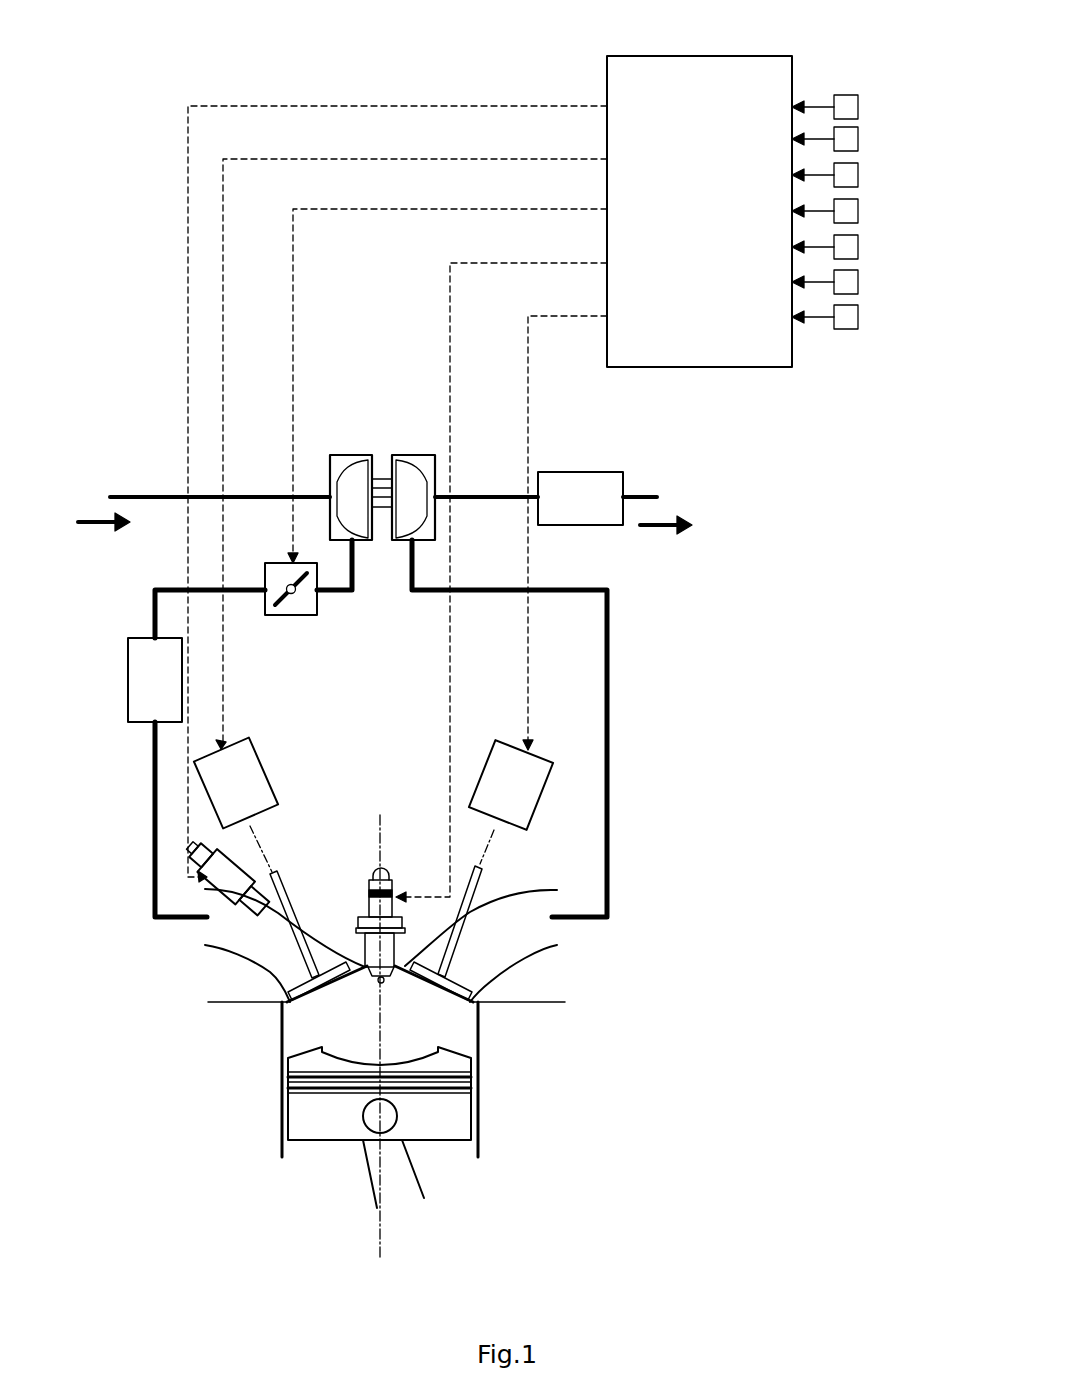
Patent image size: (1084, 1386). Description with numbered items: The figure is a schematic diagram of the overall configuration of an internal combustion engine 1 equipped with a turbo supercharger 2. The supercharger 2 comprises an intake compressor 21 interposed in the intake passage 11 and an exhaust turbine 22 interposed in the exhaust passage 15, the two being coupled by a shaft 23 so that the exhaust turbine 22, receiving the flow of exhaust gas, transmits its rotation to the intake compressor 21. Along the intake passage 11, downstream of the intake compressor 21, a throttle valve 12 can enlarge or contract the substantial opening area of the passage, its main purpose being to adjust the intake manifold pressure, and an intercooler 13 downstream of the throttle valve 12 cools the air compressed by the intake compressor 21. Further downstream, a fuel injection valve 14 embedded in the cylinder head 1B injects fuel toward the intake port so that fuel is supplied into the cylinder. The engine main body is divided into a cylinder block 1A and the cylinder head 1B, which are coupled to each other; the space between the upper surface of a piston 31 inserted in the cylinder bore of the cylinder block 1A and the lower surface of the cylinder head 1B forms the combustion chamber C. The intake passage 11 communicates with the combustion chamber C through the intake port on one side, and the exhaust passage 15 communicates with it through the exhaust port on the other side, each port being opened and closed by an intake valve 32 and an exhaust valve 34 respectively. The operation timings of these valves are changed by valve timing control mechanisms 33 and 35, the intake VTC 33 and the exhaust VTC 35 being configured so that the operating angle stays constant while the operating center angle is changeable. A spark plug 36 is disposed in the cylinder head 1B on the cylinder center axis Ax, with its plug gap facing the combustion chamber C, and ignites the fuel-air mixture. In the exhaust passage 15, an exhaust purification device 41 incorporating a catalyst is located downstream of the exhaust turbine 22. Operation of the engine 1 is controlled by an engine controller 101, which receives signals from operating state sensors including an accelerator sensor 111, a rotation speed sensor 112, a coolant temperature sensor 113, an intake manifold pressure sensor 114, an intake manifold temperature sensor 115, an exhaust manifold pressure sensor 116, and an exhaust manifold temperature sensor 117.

The internal combustion engine 1 is at (693, 601).
The cylinder block 1A is at (378, 1079).
The cylinder head 1B is at (385, 945).
The turbo supercharger 2 is at (384, 448).
The intake passage 11 is at (171, 496).
The throttle valve 12 is at (292, 616).
The intercooler 13 is at (128, 683).
The fuel injection valve 14 is at (253, 870).
The exhaust passage 15 is at (486, 496).
The intake compressor 21 is at (352, 455).
The exhaust turbine 22 is at (412, 455).
The shaft 23 is at (382, 508).
The piston 31 is at (288, 1112).
The intake valve 32 is at (317, 947).
The valve timing control mechanism (intake VTC) 33 is at (278, 775).
The exhaust valve 34 is at (441, 947).
The valve timing control mechanism (exhaust VTC) 35 is at (540, 803).
The spark plug 36 is at (367, 892).
The exhaust purification device 41 is at (580, 472).
The engine controller 101 is at (730, 56).
The accelerator sensor 111 is at (858, 105).
The rotation speed sensor 112 is at (858, 137).
The coolant temperature sensor 113 is at (858, 173).
The intake manifold pressure sensor 114 is at (858, 209).
The intake manifold temperature sensor 115 is at (858, 245).
The exhaust manifold pressure sensor 116 is at (858, 280).
The exhaust manifold temperature sensor 117 is at (858, 315).
The cylinder center axis Ax is at (378, 824).
The combustion chamber C is at (478, 1030).